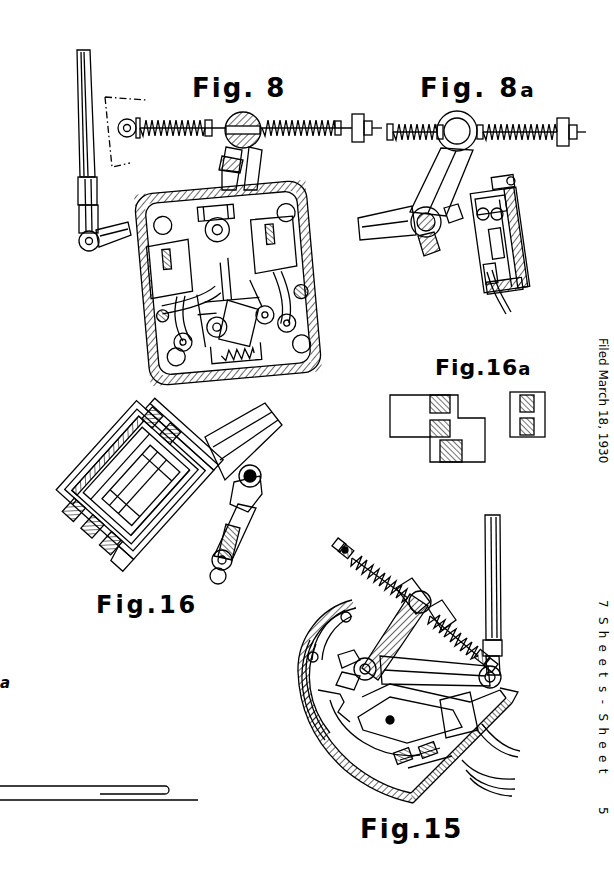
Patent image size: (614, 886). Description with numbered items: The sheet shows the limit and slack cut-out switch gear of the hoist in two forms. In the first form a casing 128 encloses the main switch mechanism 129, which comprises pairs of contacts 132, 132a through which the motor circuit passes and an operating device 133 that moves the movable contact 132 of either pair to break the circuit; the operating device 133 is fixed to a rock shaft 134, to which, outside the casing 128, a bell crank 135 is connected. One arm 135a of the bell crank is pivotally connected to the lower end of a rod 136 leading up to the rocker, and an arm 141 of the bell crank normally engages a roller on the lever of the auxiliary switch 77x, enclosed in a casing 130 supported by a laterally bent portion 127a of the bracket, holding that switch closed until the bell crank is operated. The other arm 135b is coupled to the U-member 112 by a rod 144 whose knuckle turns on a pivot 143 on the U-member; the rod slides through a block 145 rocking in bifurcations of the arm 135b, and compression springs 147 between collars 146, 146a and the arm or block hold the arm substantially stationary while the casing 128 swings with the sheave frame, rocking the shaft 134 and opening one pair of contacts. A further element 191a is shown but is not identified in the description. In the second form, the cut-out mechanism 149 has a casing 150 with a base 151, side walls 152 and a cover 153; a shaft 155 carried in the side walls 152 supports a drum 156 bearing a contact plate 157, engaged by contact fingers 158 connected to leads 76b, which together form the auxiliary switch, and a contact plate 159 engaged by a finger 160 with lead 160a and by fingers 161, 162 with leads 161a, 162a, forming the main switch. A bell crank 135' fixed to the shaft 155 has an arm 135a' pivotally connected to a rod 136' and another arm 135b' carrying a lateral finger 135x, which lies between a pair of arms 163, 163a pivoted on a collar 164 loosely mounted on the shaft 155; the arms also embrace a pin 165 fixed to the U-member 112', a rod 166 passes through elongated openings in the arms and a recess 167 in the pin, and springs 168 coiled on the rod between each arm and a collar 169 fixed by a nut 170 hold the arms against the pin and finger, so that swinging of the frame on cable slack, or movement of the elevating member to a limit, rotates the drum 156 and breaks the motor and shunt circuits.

In FIG. 15, the leads 76b is at (514, 748).
In FIG. 8A, the auxiliary switch 77x is at (485, 268).
In FIG. 8, the U-member 112 is at (125, 122).
In FIG. 16, the U-member 112' is at (249, 436).
In FIG. 8A, the laterally bent portion of bracket 127a is at (522, 240).
In FIG. 8, the casing 128 is at (320, 340).
In FIG. 8, the main switch mechanism 129 is at (210, 217).
In FIG. 8A, the casing 130 is at (482, 287).
In FIG. 8, the movable contact 132 is at (166, 197).
In FIG. 8, the contact 132a is at (140, 289).
In FIG. 8, the operating device 133 is at (144, 303).
In FIG. 8, the rock shaft 134 is at (250, 182).
In FIG. 8A, the rock shaft 134 is at (418, 242).
In FIG. 8A, the bell crank 135 is at (387, 218).
In FIG. 8, the arm of bell crank 135a is at (92, 248).
In FIG. 8A, the arm of bell crank 135a is at (402, 233).
In FIG. 8, the arm of bell crank 135b is at (210, 167).
In FIG. 8A, the arm of bell crank 135b is at (459, 182).
In FIG. 15, the arm of bell crank 135b is at (406, 634).
In FIG. 16, the lateral finger 135x is at (258, 494).
In FIG. 15, the bell crank 135' is at (516, 683).
In FIG. 15, the arm of bell crank 135a' is at (429, 713).
In FIG. 16, the arm of bell crank 135b' is at (258, 532).
In FIG. 8, the rod 136 is at (68, 141).
In FIG. 15, the rod 136' is at (522, 595).
In FIG. 8A, the arm 141 is at (486, 224).
In FIG. 8, the pivot 143 is at (132, 119).
In FIG. 8, the rod 144 is at (372, 112).
In FIG. 8A, the rod 144 is at (566, 146).
In FIG. 8, the block 145 is at (254, 116).
In FIG. 8A, the block 145 is at (449, 138).
In FIG. 8, the collar 146 is at (142, 122).
In FIG. 8, the collar 146a is at (366, 121).
In FIG. 8A, the collar 146a is at (572, 122).
In FIG. 8, the compression spring 147 is at (178, 139).
In FIG. 8A, the compression spring 147 is at (412, 115).
In FIG. 15, the cut-out mechanism 149 is at (337, 701).
In FIG. 15, the casing 150 is at (372, 762).
In FIG. 15, the base 151 is at (452, 780).
In FIG. 16, the side walls 152 is at (78, 464).
In FIG. 16, the cover 153 is at (82, 528).
In FIG. 15, the cover 153 is at (318, 724).
In FIG. 16, the shaft 155 is at (98, 428).
In FIG. 15, the shaft 155 is at (352, 670).
In FIG. 16, the drum 156 is at (204, 438).
In FIG. 15, the drum 156 is at (320, 665).
In FIG. 16, the contact plate 157 is at (96, 446).
In FIG. 16A, the contact plate 157 is at (546, 421).
In FIG. 16, the contact fingers 158 is at (178, 426).
In FIG. 16A, the contact fingers 158 is at (532, 397).
In FIG. 16, the contact plate 159 is at (74, 480).
In FIG. 16A, the contact plate 159 is at (394, 411).
In FIG. 16, the finger 160 is at (94, 542).
In FIG. 16A, the finger 160 is at (432, 429).
In FIG. 15, the lead 160a is at (510, 775).
In FIG. 16, the finger 161 is at (70, 510).
In FIG. 16A, the finger 161 is at (438, 396).
In FIG. 15, the lead 161a is at (516, 786).
In FIG. 16, the finger 162 is at (110, 562).
In FIG. 16A, the finger 162 is at (448, 464).
In FIG. 15, the lead 162a is at (498, 790).
In FIG. 16, the arm 163 is at (260, 456).
In FIG. 15, the arm 163 is at (462, 608).
In FIG. 16, the arm 163a is at (240, 540).
In FIG. 15, the arm 163a is at (406, 588).
In FIG. 16, the collar 164 is at (202, 556).
In FIG. 16, the pin 165 is at (262, 474).
In FIG. 15, the pin 165 is at (430, 596).
In FIG. 15, the rod 166 is at (345, 551).
In FIG. 16, the recess 167 is at (268, 462).
In FIG. 15, the spring 168 is at (380, 567).
In FIG. 15, the collar 169 is at (342, 553).
In FIG. 15, the nut 170 is at (356, 552).
In FIG. 8A, the contact terminal 191a is at (504, 192).